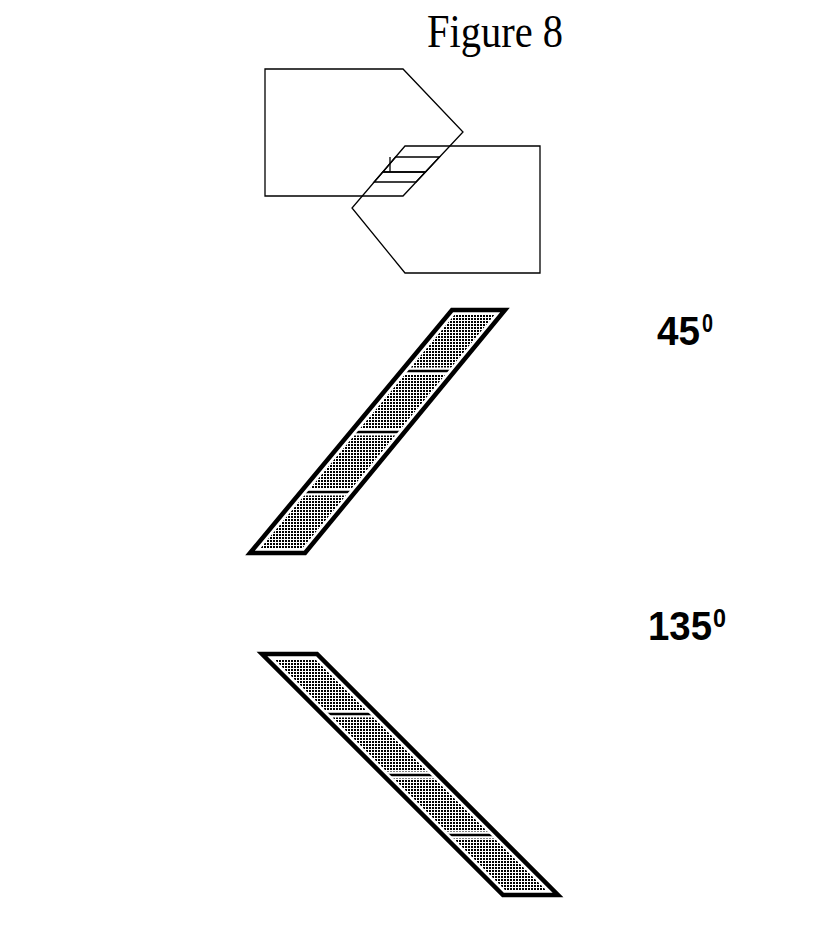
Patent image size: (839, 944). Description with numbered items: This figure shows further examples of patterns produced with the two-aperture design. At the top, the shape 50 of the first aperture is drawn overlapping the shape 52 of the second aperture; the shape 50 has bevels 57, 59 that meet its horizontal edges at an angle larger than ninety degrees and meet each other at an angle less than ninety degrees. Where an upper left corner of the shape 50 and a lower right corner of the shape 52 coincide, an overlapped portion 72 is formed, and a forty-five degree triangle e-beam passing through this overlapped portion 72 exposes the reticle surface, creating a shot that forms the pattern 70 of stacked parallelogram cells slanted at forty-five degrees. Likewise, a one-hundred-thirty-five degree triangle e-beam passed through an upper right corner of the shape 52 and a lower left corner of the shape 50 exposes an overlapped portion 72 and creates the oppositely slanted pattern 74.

The shape of AP1 50 is at (529, 222).
The shape of AP2 52 is at (278, 172).
The bevel 57 is at (416, 183).
The bevel 59 is at (390, 172).
The overlapped portion 72 is at (405, 161).
The pattern 70 is at (378, 475).
The pattern 74 is at (392, 730).